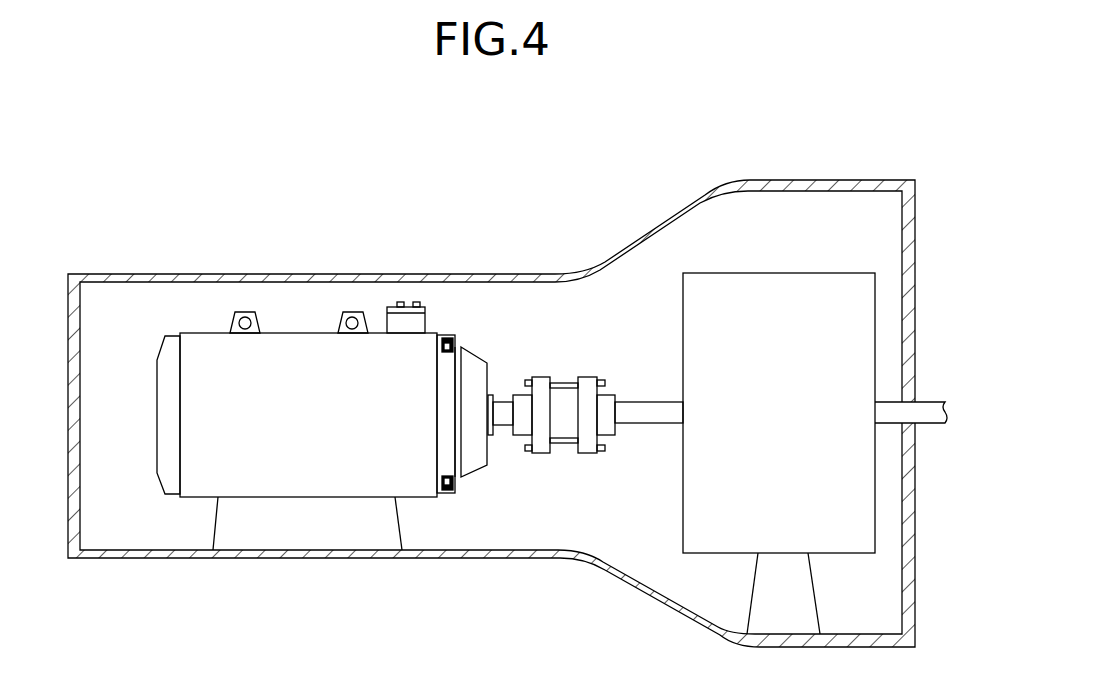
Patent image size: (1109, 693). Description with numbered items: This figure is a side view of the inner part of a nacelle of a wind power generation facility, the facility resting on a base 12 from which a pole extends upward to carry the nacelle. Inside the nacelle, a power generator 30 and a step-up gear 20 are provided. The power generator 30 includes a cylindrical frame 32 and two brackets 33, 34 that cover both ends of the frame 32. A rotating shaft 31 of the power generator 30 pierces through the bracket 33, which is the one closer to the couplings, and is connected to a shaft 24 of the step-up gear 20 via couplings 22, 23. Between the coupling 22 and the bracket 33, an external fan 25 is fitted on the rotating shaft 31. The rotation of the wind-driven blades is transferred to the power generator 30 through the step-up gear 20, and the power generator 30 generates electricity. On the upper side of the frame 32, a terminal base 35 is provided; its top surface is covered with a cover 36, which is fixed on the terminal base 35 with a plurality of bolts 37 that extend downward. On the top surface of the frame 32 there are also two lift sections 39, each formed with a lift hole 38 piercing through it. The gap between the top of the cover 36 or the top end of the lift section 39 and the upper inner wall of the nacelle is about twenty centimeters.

The base 12 is at (93, 222).
The step-up gear 20 is at (788, 272).
The coupling 22 is at (540, 377).
The coupling 23 is at (587, 377).
The shaft 24 is at (653, 400).
The external fan 25 is at (473, 450).
The power generator 30 is at (196, 297).
The rotating shaft 31 is at (502, 400).
The cylindrical frame 32 is at (327, 498).
The bracket 33 is at (458, 487).
The bracket 34 is at (172, 500).
The terminal base 35 is at (425, 320).
The cover 36 is at (403, 302).
The bolts 37 is at (418, 302).
The lift holes 38 is at (255, 318).
The lift sections 39 is at (238, 313).